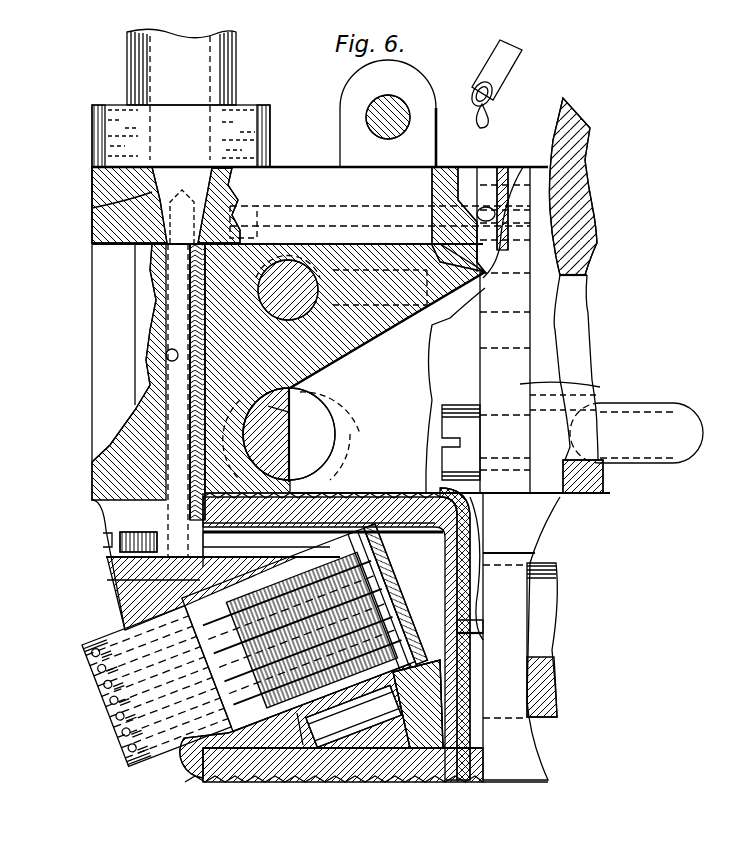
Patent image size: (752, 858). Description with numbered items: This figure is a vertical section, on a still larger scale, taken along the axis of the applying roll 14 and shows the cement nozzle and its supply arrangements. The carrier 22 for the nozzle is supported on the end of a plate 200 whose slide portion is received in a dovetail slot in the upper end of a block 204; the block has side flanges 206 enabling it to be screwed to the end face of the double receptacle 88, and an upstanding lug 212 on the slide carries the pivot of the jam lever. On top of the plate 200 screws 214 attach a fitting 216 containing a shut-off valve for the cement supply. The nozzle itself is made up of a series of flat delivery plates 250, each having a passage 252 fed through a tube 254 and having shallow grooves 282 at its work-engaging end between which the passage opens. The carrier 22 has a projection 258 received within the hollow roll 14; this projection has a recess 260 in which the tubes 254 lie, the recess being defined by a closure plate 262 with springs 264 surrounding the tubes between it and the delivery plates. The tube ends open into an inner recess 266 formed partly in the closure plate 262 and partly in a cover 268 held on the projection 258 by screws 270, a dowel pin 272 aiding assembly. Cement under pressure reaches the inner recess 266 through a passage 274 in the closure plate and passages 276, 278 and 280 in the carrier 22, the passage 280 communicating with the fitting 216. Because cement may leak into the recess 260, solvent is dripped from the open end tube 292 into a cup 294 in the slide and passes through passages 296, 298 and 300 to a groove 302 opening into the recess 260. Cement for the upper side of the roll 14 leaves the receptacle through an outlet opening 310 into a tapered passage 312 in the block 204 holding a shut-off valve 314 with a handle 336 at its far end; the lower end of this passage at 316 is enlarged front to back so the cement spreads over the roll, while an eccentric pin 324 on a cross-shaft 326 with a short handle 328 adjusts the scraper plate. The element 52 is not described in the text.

The applying roll 14 is at (300, 760).
The carrier 22 is at (122, 570).
The side member 52 is at (552, 600).
The double receptacle 88 is at (560, 122).
The plate 200 is at (92, 183).
The block 204 is at (481, 286).
The side flanges 206 is at (598, 387).
The upstanding lug 212 is at (410, 86).
The screws 214 is at (90, 193).
The fitting 216 is at (237, 72).
The delivery plates 250 is at (92, 645).
The passage 252 is at (98, 705).
The tube 254 is at (368, 582).
The projection 258 is at (262, 748).
The recess 260 is at (297, 713).
The closure plate 262 is at (355, 722).
The springs 264 is at (375, 616).
The inner recess 266 is at (462, 613).
The cover 268 is at (470, 666).
The screws 270 is at (470, 628).
The dowel pin 272 is at (420, 700).
The passage 274 is at (330, 546).
The passage 276 is at (135, 581).
The passage 278 is at (166, 357).
The passage 280 is at (100, 207).
The shallow grooves 282 is at (96, 688).
The open end tube 292 is at (518, 74).
The cup 294 is at (465, 200).
The passage 296 is at (322, 206).
The passage 298 is at (166, 266).
The passage 300 is at (125, 600).
The groove 302 is at (300, 478).
The outlet opening 310 is at (578, 302).
The tapered passage 312 is at (433, 325).
The shut-off valve 314 is at (268, 406).
The enlarged lower end of passage 316 is at (345, 464).
The eccentric pin 324 is at (370, 342).
The cross-shaft 326 is at (282, 258).
The short handle 328 is at (380, 265).
The handle 336 is at (670, 412).